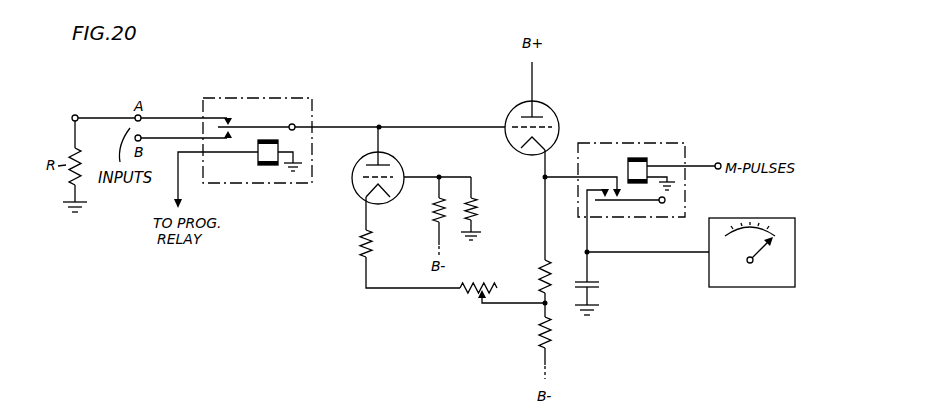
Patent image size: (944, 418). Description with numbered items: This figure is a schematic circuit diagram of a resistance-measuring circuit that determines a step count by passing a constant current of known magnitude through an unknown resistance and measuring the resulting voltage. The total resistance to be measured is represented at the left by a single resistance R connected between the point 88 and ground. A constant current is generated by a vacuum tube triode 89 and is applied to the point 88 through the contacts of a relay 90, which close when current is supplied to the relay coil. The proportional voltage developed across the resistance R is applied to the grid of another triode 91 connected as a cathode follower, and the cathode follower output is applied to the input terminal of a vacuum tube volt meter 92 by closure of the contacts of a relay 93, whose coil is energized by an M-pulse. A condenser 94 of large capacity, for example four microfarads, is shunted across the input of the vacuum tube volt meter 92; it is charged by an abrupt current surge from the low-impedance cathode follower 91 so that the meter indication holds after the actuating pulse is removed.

The point 88 is at (75, 115).
The vacuum tube triode 89 is at (398, 156).
The relay 90 is at (272, 97).
The triode 91 is at (553, 113).
The vacuum tube volt meter 92 is at (745, 288).
The relay 93 is at (647, 142).
The condenser 94 is at (602, 285).